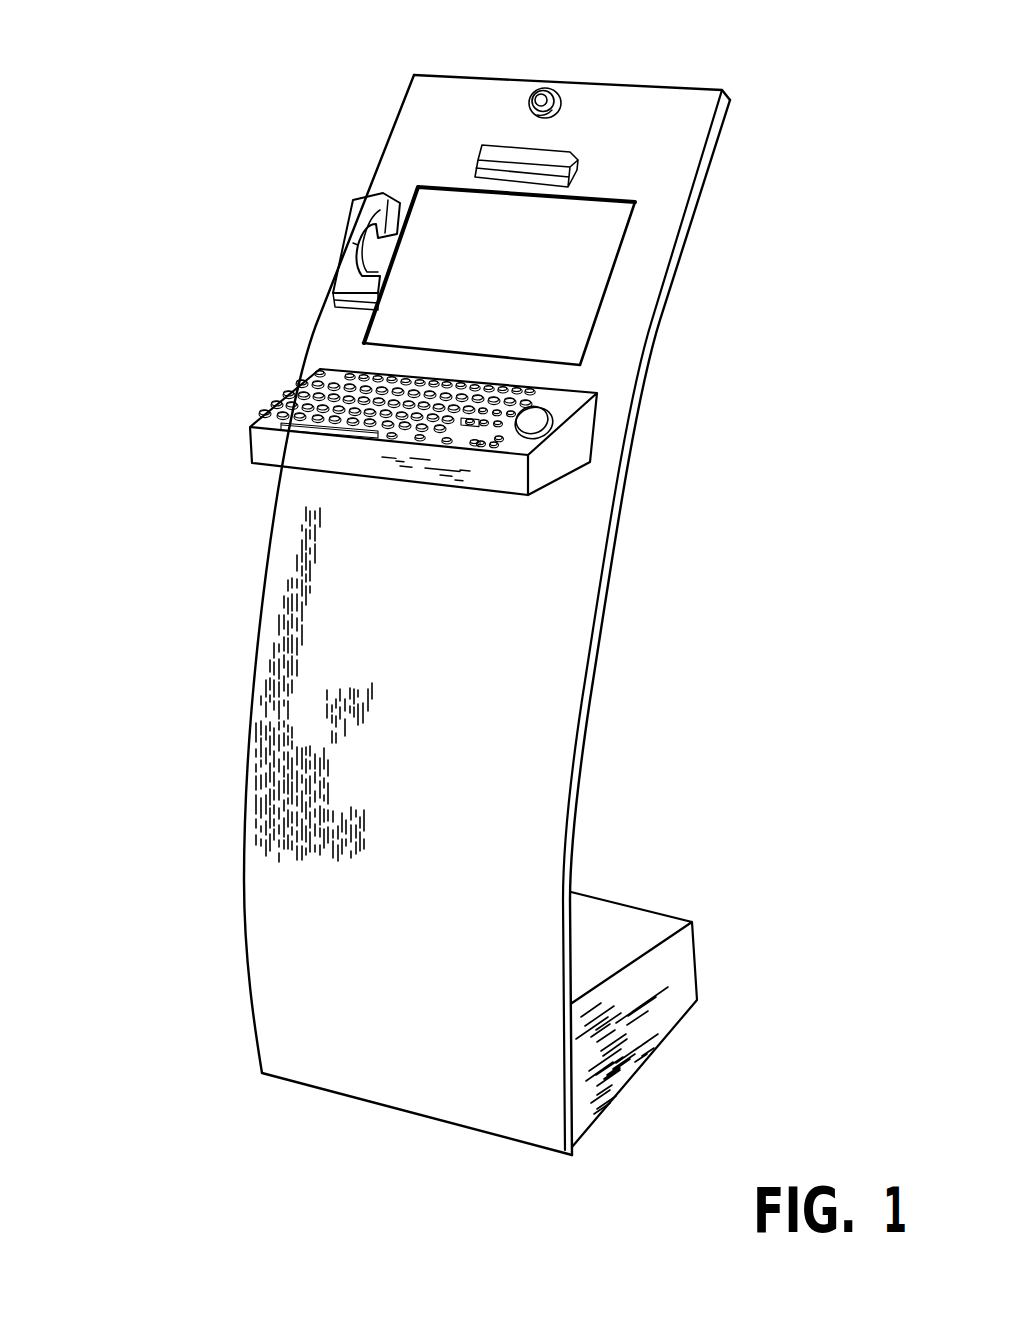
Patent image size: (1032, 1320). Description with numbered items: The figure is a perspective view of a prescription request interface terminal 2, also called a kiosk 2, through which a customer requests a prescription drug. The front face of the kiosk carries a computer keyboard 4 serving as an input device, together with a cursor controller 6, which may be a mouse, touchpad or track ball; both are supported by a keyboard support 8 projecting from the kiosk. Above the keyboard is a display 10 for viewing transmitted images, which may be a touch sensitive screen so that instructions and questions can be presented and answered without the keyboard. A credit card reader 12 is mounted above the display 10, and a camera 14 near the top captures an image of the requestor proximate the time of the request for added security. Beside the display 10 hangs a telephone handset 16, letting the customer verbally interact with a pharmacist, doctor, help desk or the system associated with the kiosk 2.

The prescription request interface terminal 2 is at (183, 288).
The computer keyboard 4 is at (343, 380).
The cursor controller 6 is at (535, 413).
The keyboard support 8 is at (552, 468).
The display 10 is at (562, 300).
The credit card reader 12 is at (576, 152).
The camera 14 is at (553, 88).
The telephone handset 16 is at (365, 208).